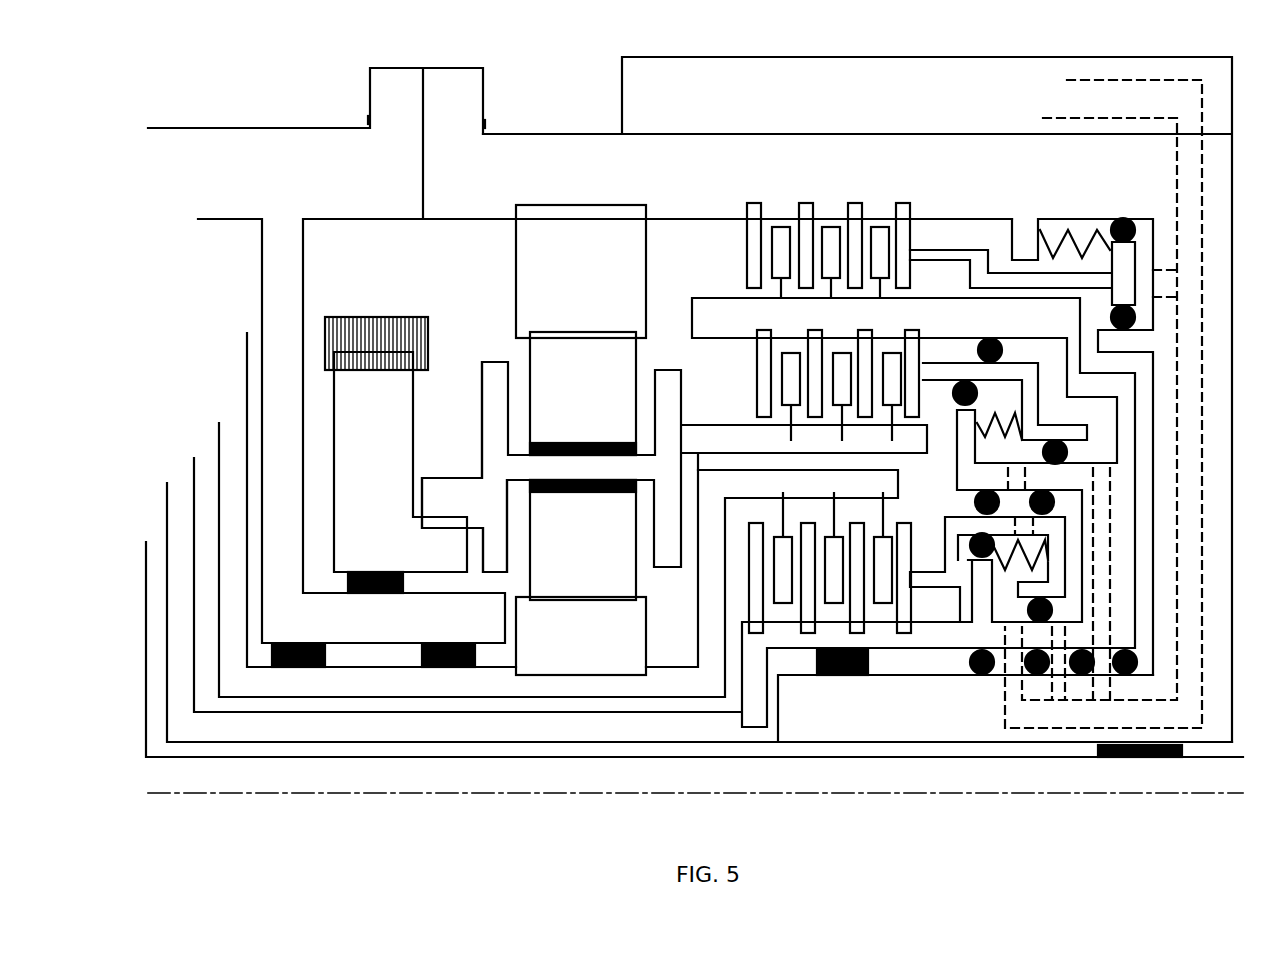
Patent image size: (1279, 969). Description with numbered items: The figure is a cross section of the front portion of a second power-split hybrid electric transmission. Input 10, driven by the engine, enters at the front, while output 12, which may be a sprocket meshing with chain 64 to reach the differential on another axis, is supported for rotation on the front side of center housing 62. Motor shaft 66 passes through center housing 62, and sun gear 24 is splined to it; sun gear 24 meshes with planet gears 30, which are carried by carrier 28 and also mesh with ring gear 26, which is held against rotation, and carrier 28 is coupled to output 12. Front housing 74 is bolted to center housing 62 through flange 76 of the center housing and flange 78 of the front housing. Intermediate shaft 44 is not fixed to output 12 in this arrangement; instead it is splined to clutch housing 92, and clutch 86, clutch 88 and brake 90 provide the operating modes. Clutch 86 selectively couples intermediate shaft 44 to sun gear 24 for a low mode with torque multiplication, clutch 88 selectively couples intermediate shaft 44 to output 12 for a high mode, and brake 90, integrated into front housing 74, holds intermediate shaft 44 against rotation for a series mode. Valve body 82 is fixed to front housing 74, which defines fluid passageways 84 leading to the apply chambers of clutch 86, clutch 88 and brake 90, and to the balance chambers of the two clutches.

The input 10 is at (684, 787).
The output 12 is at (361, 459).
The sun gear 24 is at (566, 649).
The ring gear 26 is at (566, 295).
The carrier 28 is at (490, 362).
The planet gears 30 is at (569, 397).
The intermediate shaft 44 is at (480, 742).
The center housing 62 is at (291, 187).
The chain 64 is at (372, 316).
The motor shaft 66 is at (388, 700).
The front housing 74 is at (804, 195).
The flange 76 is at (368, 114).
The flange 78 is at (485, 120).
The valve body 82 is at (894, 117).
The fluid passageways 84 is at (1187, 205).
The clutch 86 is at (733, 566).
The clutch 88 is at (732, 347).
The brake 90 is at (712, 225).
The clutch housing 92 is at (928, 298).